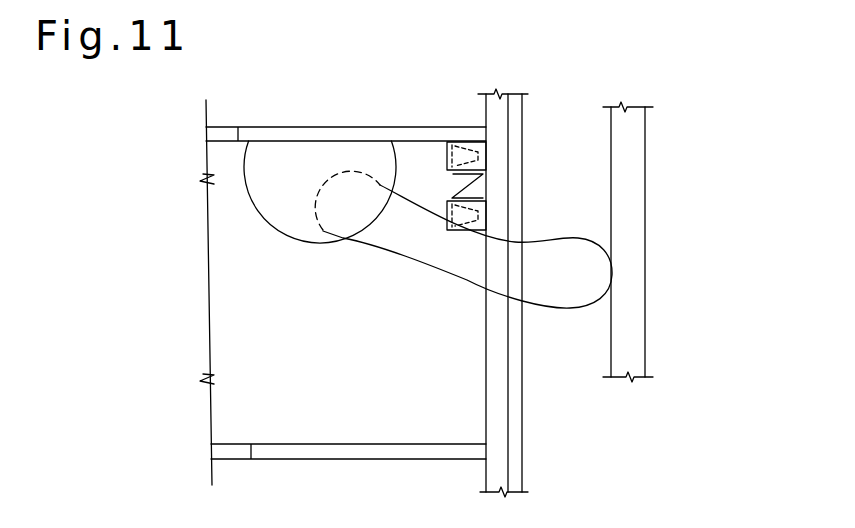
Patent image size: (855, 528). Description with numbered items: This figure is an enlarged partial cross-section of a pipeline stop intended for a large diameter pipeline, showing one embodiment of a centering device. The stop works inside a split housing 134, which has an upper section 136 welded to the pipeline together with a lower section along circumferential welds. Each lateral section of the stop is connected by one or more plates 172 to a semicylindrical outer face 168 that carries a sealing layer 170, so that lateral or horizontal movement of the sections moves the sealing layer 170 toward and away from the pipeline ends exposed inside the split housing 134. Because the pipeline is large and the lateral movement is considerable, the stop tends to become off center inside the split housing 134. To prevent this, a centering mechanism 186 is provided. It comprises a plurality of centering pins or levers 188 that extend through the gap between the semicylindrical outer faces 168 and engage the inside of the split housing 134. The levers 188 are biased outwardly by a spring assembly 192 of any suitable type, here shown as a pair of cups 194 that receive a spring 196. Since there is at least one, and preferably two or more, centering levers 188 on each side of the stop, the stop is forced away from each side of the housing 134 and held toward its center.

The split housing 134 is at (664, 242).
The upper section 136 is at (631, 343).
The semicylindrical outer face 168 is at (282, 366).
The sealing layer 170 is at (517, 428).
The plate 172 is at (223, 130).
The centering mechanism 186 is at (340, 254).
The centering lever 188 is at (418, 257).
The spring assembly 192 is at (436, 163).
The cup 194 is at (477, 212).
The spring 196 is at (478, 187).